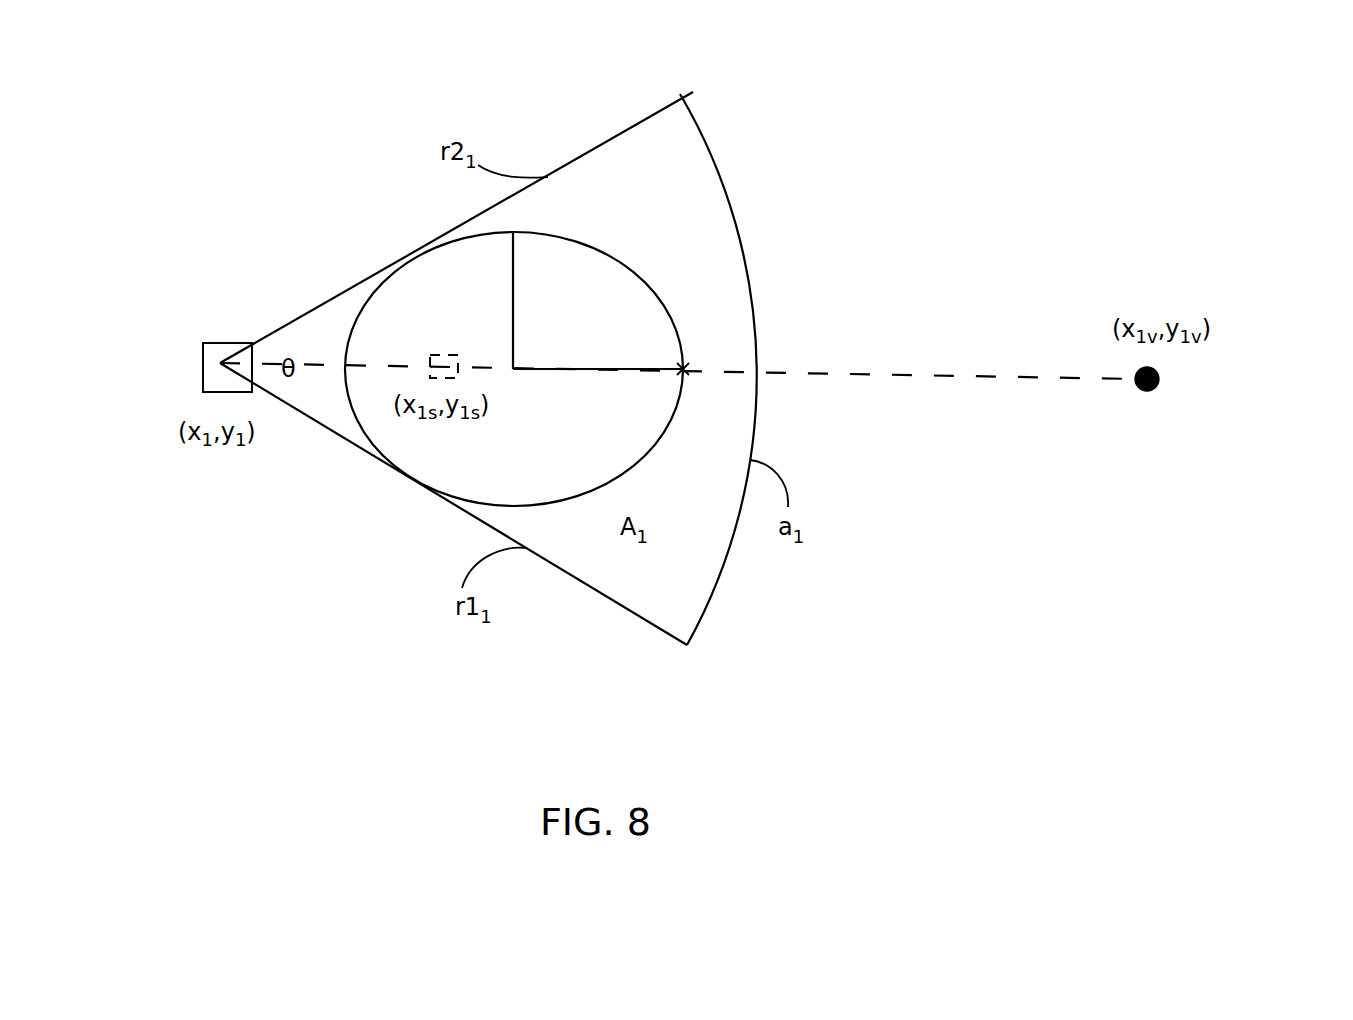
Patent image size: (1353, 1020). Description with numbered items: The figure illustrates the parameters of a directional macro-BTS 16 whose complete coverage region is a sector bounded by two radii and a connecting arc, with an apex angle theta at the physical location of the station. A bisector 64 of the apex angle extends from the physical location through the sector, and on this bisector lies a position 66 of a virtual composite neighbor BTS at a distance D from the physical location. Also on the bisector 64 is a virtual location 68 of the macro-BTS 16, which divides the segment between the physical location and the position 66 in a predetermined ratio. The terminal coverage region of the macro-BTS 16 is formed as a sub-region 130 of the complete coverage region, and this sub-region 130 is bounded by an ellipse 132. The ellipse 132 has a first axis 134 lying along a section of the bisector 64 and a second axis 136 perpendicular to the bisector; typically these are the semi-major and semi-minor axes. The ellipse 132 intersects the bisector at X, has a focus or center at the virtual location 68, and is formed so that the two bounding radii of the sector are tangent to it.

The directional macro-BTS 16 is at (220, 362).
The bisector 64 is at (972, 378).
The position of virtual composite neighbor BTS 66 is at (1160, 378).
The virtual location 68 is at (433, 363).
The sub-region 130 is at (398, 445).
The ellipse 132 is at (353, 412).
The first axis 134 is at (543, 370).
The second axis 136 is at (515, 312).